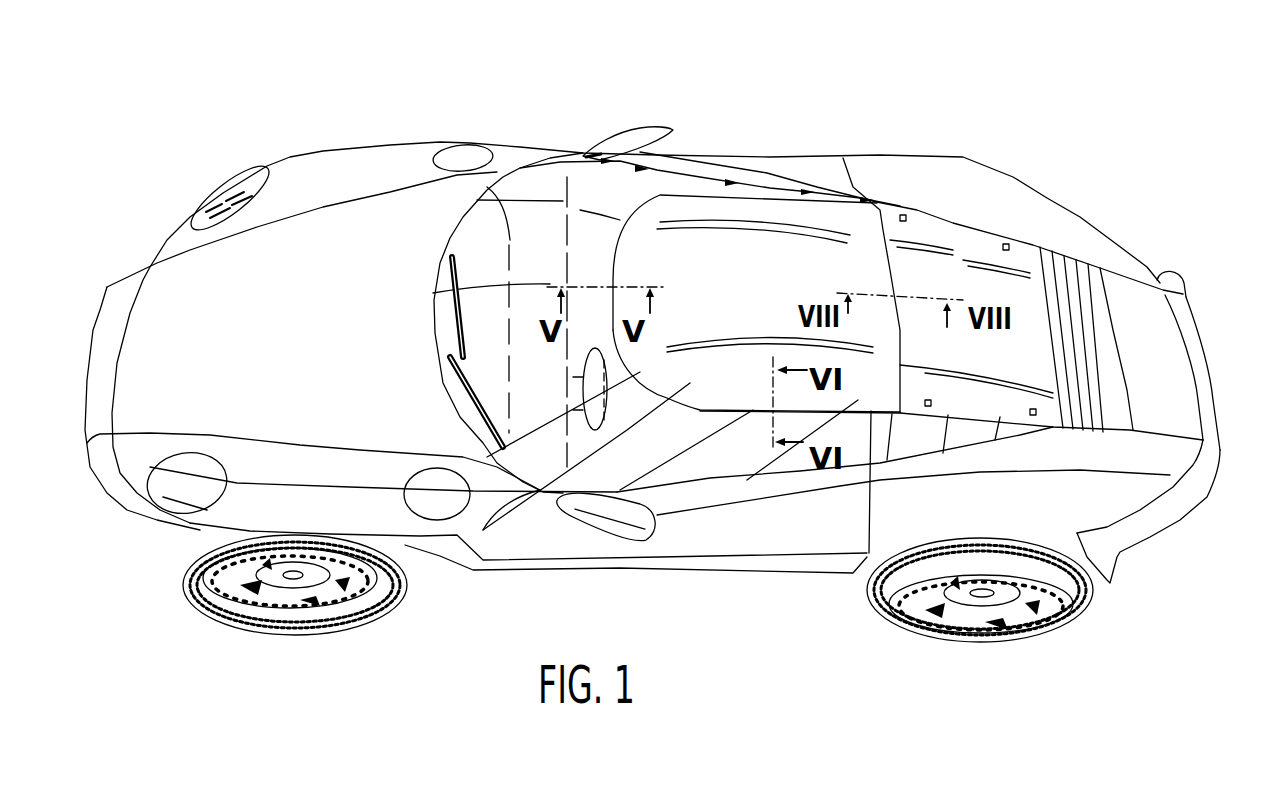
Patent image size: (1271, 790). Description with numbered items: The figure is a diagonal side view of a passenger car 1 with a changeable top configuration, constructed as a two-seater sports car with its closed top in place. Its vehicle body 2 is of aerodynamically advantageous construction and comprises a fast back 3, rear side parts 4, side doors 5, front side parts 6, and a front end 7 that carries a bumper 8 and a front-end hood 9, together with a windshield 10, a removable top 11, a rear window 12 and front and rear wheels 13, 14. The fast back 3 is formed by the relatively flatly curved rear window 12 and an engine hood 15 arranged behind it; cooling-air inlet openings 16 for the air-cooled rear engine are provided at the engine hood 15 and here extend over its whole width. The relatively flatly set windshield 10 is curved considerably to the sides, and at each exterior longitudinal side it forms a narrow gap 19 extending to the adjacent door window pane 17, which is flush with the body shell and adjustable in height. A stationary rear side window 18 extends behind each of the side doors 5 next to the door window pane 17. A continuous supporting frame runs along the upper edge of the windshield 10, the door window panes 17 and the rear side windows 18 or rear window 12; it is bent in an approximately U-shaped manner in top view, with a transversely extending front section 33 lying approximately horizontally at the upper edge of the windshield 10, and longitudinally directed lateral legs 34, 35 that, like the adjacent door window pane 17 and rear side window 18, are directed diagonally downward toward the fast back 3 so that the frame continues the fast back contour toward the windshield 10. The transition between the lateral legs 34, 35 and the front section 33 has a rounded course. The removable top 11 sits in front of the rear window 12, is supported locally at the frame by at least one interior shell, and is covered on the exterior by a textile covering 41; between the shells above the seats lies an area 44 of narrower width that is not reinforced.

The passenger car 1 is at (407, 145).
The vehicle body 2 is at (737, 147).
The fast back 3 is at (1047, 235).
The rear side parts 4 is at (1113, 493).
The side doors 5 is at (775, 543).
The front side parts 6 is at (360, 612).
The front end 7 is at (104, 278).
The bumper 8 is at (97, 393).
The front-end hood 9 is at (193, 267).
The windshield 10 is at (588, 190).
The removable top 11 is at (718, 210).
The rear window 12 is at (940, 230).
The wheel 13 is at (306, 610).
The wheel 14 is at (1063, 612).
The engine hood 15 is at (1180, 357).
The cooling-air inlet openings 16 is at (1063, 292).
The door window pane 17 is at (860, 392).
The rear side window 18 is at (977, 427).
The gap 19 is at (597, 425).
The front section 33 is at (620, 237).
The lateral leg 34 is at (733, 413).
The lateral leg 35 is at (793, 177).
The textile covering 41 is at (690, 382).
The area 44 is at (700, 245).